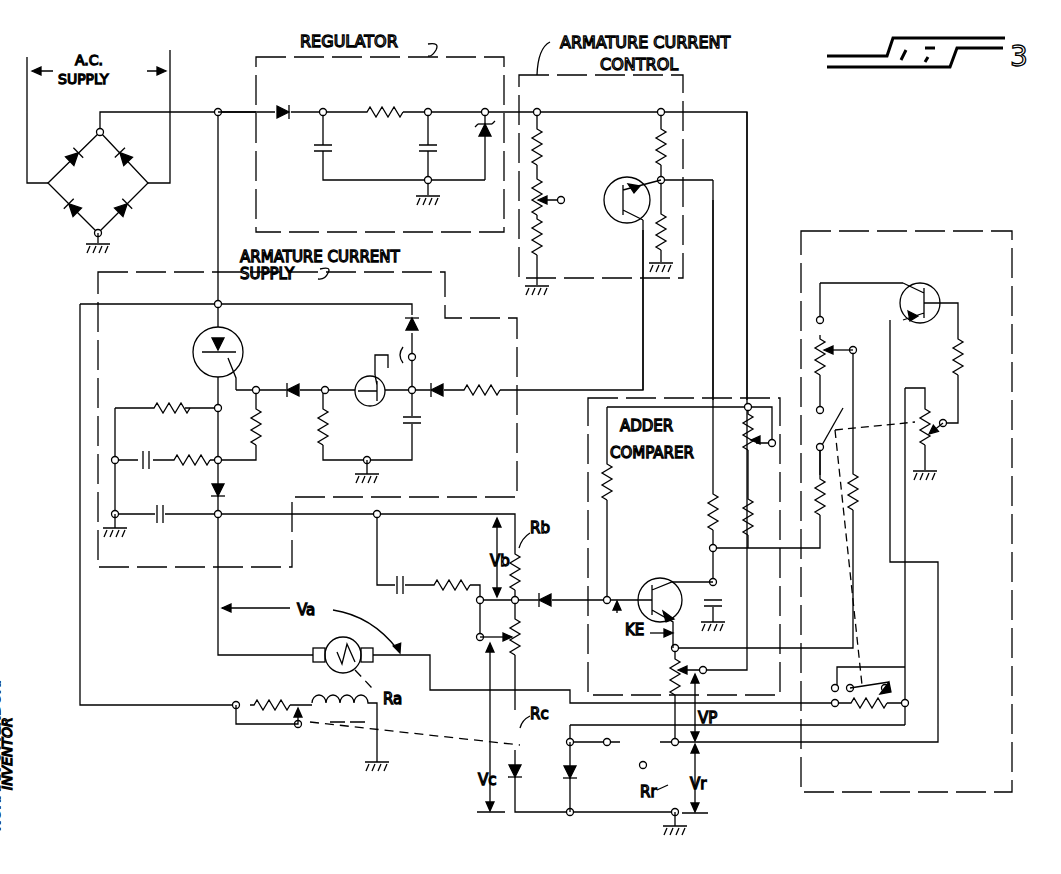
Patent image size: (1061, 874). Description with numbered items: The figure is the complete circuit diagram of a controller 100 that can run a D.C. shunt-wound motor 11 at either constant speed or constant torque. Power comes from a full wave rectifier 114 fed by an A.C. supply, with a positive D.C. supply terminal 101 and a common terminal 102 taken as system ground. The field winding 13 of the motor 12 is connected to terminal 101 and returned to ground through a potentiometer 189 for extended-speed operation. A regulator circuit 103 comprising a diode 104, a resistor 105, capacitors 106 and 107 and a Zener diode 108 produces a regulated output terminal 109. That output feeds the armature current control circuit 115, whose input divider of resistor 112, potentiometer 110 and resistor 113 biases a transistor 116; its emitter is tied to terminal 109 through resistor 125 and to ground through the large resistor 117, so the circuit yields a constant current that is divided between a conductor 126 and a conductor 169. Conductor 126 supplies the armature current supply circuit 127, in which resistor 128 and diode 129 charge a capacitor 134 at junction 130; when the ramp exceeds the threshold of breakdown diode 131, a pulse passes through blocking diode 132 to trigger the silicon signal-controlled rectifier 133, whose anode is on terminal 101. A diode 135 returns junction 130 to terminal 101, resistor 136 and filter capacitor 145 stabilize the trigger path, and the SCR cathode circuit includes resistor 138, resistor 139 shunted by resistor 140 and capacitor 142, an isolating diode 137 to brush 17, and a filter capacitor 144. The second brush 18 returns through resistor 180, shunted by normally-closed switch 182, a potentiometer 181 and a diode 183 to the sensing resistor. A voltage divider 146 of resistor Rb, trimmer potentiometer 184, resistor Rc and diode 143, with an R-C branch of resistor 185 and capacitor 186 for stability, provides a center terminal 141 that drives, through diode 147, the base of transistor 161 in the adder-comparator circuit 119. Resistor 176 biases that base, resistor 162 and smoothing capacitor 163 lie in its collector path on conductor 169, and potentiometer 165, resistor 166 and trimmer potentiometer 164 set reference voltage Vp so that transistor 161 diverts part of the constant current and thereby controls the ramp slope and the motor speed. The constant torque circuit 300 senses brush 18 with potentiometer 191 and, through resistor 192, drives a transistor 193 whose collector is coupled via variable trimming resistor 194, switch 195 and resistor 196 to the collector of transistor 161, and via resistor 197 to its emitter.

The D.C. shunt-wound motor 11 is at (300, 681).
The motor 12 is at (328, 642).
The field winding 13 is at (350, 720).
The brush 17 is at (313, 662).
The second armature brush 18 is at (373, 670).
The controller 100 is at (773, 152).
The positive D.C. supply terminal 101 is at (95, 129).
The common terminal 102 is at (95, 238).
The regulator circuit 103 is at (252, 80).
The diode 104 is at (279, 90).
The resistor 105 is at (403, 85).
The capacitor 106 is at (332, 155).
The capacitor 107 is at (426, 150).
The Zener diode 108 is at (478, 142).
The output terminal 109 is at (484, 108).
The potentiometer 110 is at (541, 198).
The resistor 112 is at (540, 150).
The resistor 113 is at (543, 253).
The full wave rectifier 114 is at (112, 192).
The armature current control circuit 115 is at (683, 150).
The transistor 116 is at (630, 225).
The resistor 117 is at (666, 236).
The adder-comparator circuit 119 is at (588, 440).
The resistor 125 is at (658, 148).
The conductor 126 is at (643, 343).
The armature current supply circuit 127 is at (520, 370).
The resistor 128 is at (498, 388).
The diode 129 is at (441, 393).
The junction 130 is at (415, 388).
The breakdown diode 131 is at (364, 383).
The blocking diode 132 is at (294, 384).
The silicon signal-controlled rectifier 133 is at (240, 342).
The capacitor 134 is at (421, 426).
The diode 135 is at (410, 318).
The resistor 136 is at (325, 436).
The isolating diode 137 is at (226, 492).
The resistor 138 is at (260, 428).
The resistor 139 is at (184, 403).
The resistor 140 is at (197, 455).
The center terminal 141 is at (518, 598).
The capacitor 142 is at (147, 453).
The diode 143 is at (522, 770).
The filter capacitor 144 is at (163, 527).
The filter capacitor 145 is at (388, 352).
The voltage divider 146 is at (472, 607).
The diode 147 is at (545, 594).
The transistor 161 is at (672, 580).
The resistor 162 is at (710, 508).
The smoothing capacitor 163 is at (718, 598).
The trimmer potentiometer 164 is at (752, 438).
The potentiometer 165 is at (670, 663).
The resistor 166 is at (745, 510).
The conductor 169 is at (713, 305).
The resistor 176 is at (607, 493).
The resistor 180 is at (870, 705).
The potentiometer 181 is at (590, 777).
The normally-closed switch 182 is at (868, 688).
The diode 183 is at (564, 768).
The trimmer potentiometer 184 is at (520, 638).
The resistor 185 is at (465, 568).
The capacitor 186 is at (400, 576).
The potentiometer 189 is at (268, 708).
The potentiometer 191 is at (945, 427).
The resistor 192 is at (962, 353).
The transistor 193 is at (935, 291).
The variable trimming resistor 194 is at (830, 343).
The switch 195 is at (838, 400).
The resistor 196 is at (822, 505).
The resistor 197 is at (858, 490).
The constant torque circuit 300 is at (868, 231).